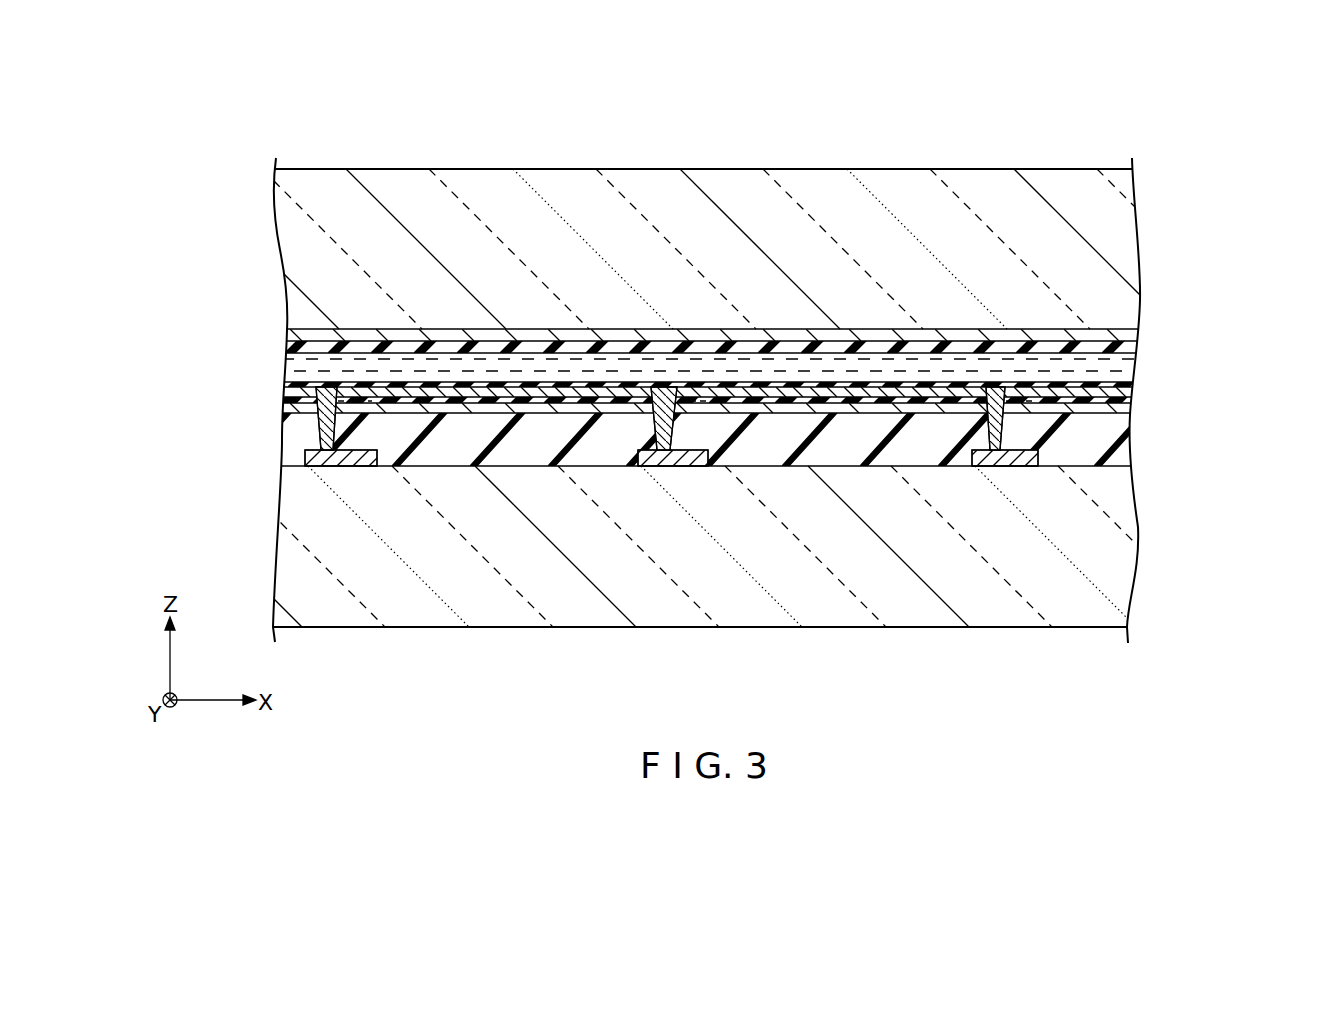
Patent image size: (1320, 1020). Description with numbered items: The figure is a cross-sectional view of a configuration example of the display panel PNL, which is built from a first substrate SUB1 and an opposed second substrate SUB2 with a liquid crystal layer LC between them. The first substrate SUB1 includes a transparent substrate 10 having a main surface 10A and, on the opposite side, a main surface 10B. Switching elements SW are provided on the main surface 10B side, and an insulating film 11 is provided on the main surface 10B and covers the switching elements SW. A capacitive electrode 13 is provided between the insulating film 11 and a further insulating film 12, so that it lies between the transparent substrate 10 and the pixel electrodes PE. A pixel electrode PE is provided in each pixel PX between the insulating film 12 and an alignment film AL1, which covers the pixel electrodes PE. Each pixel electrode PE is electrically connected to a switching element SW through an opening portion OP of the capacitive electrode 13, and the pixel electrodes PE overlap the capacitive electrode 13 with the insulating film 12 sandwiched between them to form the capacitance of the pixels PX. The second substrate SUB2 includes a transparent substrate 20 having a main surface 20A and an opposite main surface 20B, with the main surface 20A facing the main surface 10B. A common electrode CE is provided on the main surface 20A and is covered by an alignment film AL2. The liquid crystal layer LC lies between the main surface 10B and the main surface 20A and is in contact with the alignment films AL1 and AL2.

The display panel PNL is at (1117, 160).
The first substrate SUB1 is at (1152, 521).
The second substrate SUB2 is at (1152, 267).
The transparent substrate 10 is at (290, 572).
The main surface 10A is at (917, 640).
The main surface 10B is at (833, 460).
The insulating film 11 is at (292, 453).
The insulating film 12 is at (300, 392).
The capacitive electrode 13 is at (297, 406).
The transparent substrate 20 is at (290, 238).
The main surface 20A is at (874, 342).
The main surface 20B is at (928, 160).
The pixel electrode PE is at (497, 392).
The common electrode CE is at (1128, 337).
The alignment film AL1 is at (302, 386).
The alignment film AL2 is at (1130, 349).
The liquid crystal layer LC is at (1120, 377).
The switching element SW is at (327, 467).
The opening portion OP is at (320, 424).
The pixel PX is at (505, 455).